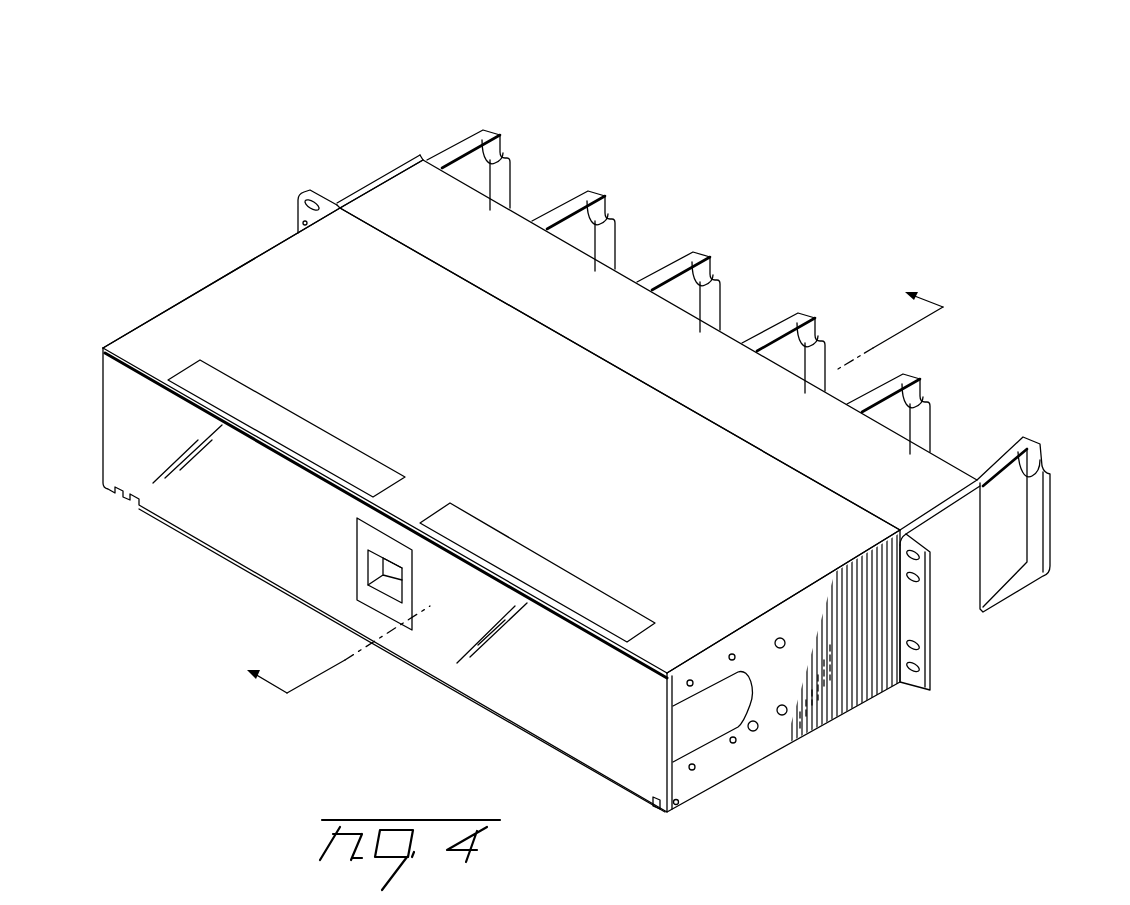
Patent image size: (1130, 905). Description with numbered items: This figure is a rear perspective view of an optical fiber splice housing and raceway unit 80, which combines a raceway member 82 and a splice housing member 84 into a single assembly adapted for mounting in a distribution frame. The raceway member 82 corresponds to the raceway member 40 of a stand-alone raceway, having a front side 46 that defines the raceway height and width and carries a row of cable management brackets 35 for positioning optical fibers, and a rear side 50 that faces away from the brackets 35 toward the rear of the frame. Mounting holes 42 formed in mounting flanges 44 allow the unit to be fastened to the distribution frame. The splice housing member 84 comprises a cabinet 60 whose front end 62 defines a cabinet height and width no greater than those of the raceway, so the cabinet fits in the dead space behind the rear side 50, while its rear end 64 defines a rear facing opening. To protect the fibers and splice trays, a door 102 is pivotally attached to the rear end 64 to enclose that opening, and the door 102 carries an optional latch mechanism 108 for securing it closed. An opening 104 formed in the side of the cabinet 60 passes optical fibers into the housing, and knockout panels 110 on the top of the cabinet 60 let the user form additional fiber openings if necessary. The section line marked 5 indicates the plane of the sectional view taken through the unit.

The optical fiber splice housing and raceway unit 80 is at (203, 148).
The raceway member 82 is at (356, 170).
The splice housing member 84 is at (228, 258).
The cabinet 60 is at (195, 318).
The front end 62 is at (455, 272).
The rear side 50 is at (537, 312).
The cable management brackets 35 is at (482, 128).
The raceway member 40 is at (505, 213).
The front side 46 is at (625, 275).
The rear end 64 is at (643, 663).
The door 102 is at (490, 668).
The opening 104 is at (718, 713).
The latch mechanism 108 is at (365, 540).
The knockout panels 110 is at (255, 405).
The mounting flanges 44 is at (920, 603).
The mounting holes 42 is at (915, 690).
The section line 5- 5 is at (580, 472).